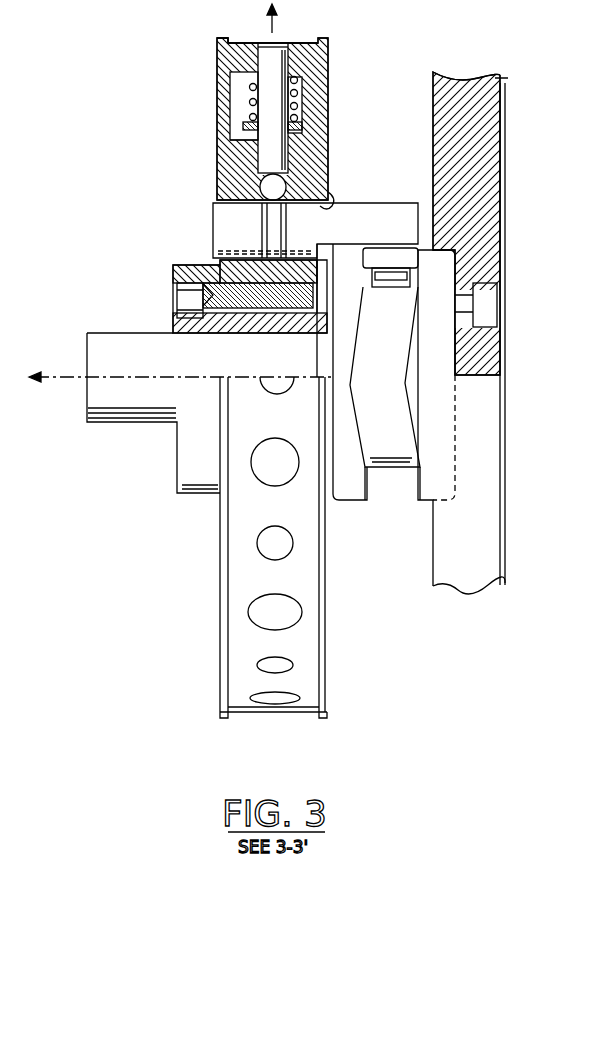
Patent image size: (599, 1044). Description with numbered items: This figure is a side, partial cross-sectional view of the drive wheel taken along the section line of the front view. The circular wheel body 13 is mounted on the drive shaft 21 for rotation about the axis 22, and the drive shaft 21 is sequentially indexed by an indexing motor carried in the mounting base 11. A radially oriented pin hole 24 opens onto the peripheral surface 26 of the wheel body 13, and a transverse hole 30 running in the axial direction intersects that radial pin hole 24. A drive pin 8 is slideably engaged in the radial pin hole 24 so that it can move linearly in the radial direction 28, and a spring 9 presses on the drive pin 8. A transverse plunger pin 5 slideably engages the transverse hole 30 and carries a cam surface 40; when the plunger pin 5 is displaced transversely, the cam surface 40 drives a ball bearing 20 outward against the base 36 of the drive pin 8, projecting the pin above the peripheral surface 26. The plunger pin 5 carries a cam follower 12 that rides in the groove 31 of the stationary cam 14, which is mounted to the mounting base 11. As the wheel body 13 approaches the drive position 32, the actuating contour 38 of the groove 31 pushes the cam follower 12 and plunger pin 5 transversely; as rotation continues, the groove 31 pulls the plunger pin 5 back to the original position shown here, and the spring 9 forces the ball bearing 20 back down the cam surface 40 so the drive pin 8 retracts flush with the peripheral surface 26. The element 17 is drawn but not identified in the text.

The transverse plunger pin 5 is at (213, 213).
The drive pin 8 is at (277, 43).
The spring 9 is at (295, 96).
The mounting base 11 is at (503, 105).
The cam follower 12 is at (380, 261).
The wheel body 13 is at (217, 62).
The stationary cam 14 is at (440, 290).
The housing flange 17 is at (216, 50).
The ball bearing 20 is at (260, 177).
The drive shaft 21 is at (93, 397).
The axis 22 is at (58, 378).
The radial pin hole 24 is at (280, 66).
The peripheral surface 26 is at (255, 28).
The radial direction 28 is at (274, 22).
The transverse hole 30 is at (330, 195).
The groove 31 is at (397, 363).
The drive position 32 is at (280, 375).
The base 36 is at (233, 157).
The actuating contour 38 is at (352, 390).
The cam surface 40 is at (267, 226).